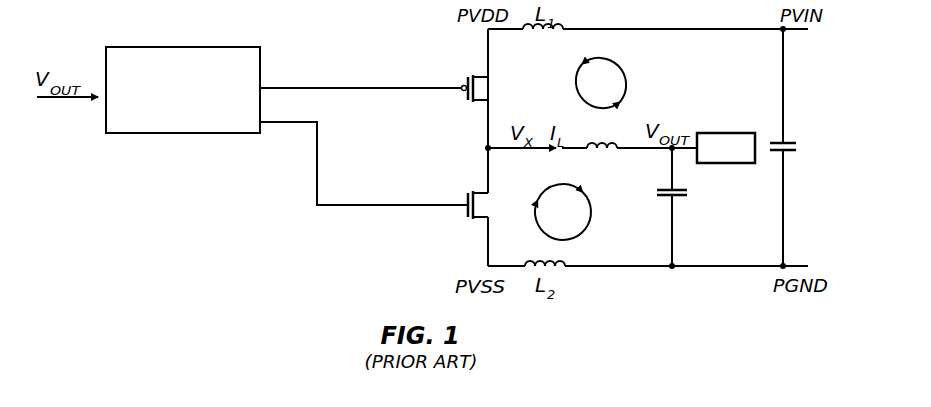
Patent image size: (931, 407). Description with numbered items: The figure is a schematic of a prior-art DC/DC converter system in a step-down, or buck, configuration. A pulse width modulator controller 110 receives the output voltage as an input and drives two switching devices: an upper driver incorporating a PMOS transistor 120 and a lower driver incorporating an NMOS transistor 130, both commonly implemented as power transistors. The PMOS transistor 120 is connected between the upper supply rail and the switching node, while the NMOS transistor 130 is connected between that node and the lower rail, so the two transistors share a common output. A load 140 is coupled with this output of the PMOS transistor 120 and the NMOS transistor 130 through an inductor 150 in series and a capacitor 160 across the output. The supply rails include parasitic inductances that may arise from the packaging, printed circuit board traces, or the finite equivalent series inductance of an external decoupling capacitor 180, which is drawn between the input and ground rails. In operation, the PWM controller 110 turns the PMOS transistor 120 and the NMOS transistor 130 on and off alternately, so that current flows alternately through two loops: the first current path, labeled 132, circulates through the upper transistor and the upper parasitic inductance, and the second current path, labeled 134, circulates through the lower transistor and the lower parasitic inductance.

The PWM controller 110 is at (126, 47).
The PMOS transistor 120 is at (468, 101).
The NMOS transistor 130 is at (468, 219).
The current loop I1 132 is at (576, 80).
The current loop I2 134 is at (541, 232).
The load 140 is at (719, 133).
The inductor 150 is at (590, 153).
The capacitor 160 is at (686, 197).
The external decoupling capacitor 180 is at (787, 143).